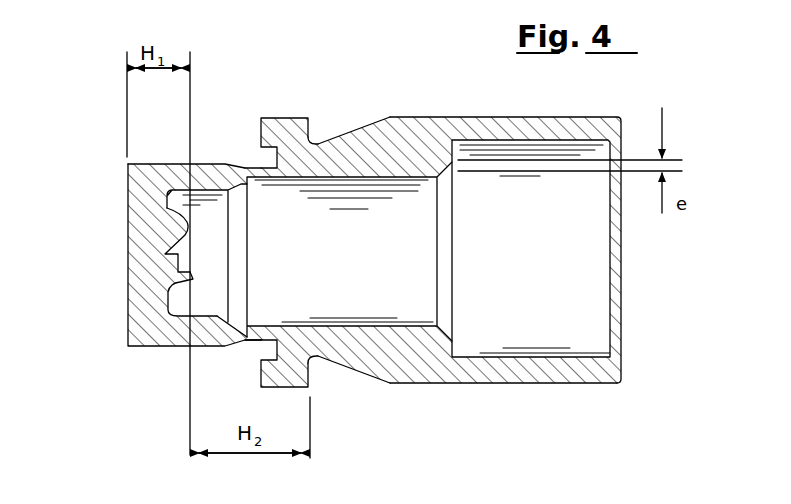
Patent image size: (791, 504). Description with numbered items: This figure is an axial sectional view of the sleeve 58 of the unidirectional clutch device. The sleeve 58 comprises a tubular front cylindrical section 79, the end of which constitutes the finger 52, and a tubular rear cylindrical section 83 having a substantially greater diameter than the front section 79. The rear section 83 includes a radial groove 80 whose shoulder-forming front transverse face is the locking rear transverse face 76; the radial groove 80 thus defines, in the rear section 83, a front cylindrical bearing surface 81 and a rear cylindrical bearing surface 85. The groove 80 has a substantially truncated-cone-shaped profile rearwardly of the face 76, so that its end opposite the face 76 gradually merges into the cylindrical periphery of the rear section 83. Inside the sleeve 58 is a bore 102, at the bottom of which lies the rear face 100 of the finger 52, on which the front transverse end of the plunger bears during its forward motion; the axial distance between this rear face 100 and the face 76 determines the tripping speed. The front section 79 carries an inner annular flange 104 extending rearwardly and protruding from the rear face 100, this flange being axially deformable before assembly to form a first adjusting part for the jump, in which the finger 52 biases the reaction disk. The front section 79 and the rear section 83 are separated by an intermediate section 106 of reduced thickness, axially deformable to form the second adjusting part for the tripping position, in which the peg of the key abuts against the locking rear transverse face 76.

The finger 52 is at (128, 277).
The sleeve 58 is at (579, 392).
The locking rear transverse face 76 is at (314, 142).
The front cylindrical section 79 is at (153, 164).
The radial groove 80 is at (317, 143).
The front cylindrical bearing surface 81 is at (261, 118).
The rear cylindrical section 83 is at (414, 364).
The rear cylindrical bearing surface 85 is at (503, 384).
The rear face of the finger 100 is at (205, 272).
The bore 102 is at (592, 264).
The inner annular flange 104 is at (162, 208).
The intermediate section 106 is at (253, 170).